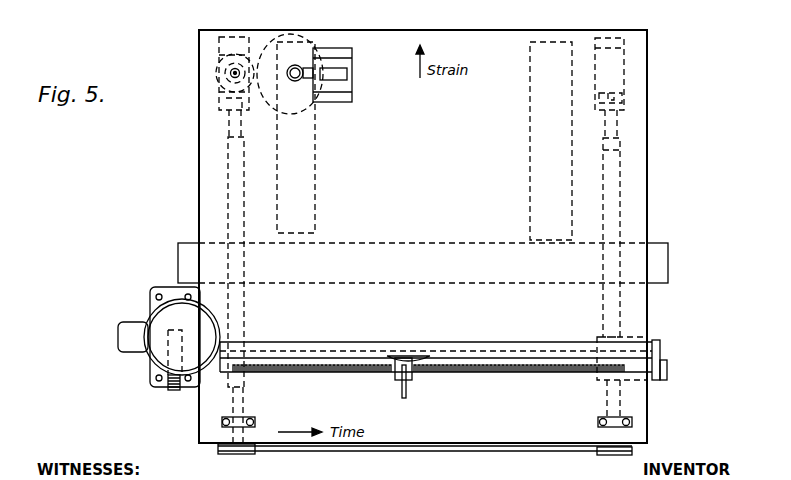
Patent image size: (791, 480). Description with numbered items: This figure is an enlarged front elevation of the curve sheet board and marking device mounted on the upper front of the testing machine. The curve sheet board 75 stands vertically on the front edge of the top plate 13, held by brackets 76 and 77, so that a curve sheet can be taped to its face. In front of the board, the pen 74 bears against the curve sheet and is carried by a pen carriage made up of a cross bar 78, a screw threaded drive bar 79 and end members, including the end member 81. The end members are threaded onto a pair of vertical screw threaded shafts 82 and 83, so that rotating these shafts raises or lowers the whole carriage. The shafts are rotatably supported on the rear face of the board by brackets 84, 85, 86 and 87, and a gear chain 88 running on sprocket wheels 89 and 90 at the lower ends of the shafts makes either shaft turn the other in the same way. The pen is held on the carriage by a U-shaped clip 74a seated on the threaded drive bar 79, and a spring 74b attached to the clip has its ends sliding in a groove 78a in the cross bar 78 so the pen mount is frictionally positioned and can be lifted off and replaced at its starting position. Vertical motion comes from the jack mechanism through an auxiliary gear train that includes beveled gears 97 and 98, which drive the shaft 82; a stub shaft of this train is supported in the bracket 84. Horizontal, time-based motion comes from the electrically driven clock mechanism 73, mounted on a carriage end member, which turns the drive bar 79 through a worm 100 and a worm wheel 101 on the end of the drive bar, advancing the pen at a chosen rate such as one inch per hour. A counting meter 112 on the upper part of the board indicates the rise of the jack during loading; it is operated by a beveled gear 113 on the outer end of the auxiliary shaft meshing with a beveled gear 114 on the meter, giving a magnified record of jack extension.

The top plate 13 is at (668, 247).
The clock mechanism 73 is at (155, 352).
The pen 74 is at (410, 395).
The U-shaped clip 74a is at (398, 373).
The spring 74b is at (432, 357).
The curve sheet board 75 is at (647, 152).
The bracket 76 is at (532, 147).
The bracket 77 is at (318, 158).
The cross bar 78 is at (505, 343).
The groove 78a is at (363, 350).
The screw threaded drive bar 79 is at (322, 373).
The end member 81 is at (664, 352).
The vertical screw threaded shaft 82 is at (228, 157).
The vertical screw threaded shaft 83 is at (620, 181).
The bracket 84 is at (222, 106).
The bracket 85 is at (222, 423).
The bracket 86 is at (624, 70).
The bracket 87 is at (633, 422).
The gear chain 88 is at (350, 453).
The sprocket wheel 89 is at (242, 455).
The sprocket wheel 90 is at (600, 453).
The beveled gear 97 is at (216, 66).
The beveled gear 98 is at (222, 93).
The worm 100 is at (177, 343).
The worm wheel 101 is at (172, 390).
The counting meter 112 is at (352, 63).
The beveled gear 113 is at (298, 82).
The beveled gear 114 is at (300, 67).